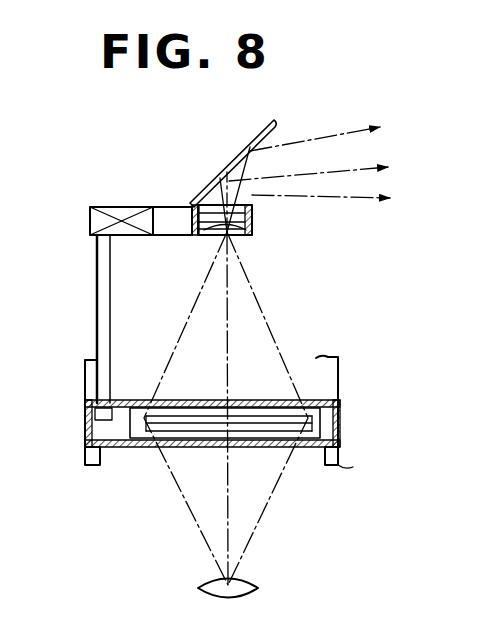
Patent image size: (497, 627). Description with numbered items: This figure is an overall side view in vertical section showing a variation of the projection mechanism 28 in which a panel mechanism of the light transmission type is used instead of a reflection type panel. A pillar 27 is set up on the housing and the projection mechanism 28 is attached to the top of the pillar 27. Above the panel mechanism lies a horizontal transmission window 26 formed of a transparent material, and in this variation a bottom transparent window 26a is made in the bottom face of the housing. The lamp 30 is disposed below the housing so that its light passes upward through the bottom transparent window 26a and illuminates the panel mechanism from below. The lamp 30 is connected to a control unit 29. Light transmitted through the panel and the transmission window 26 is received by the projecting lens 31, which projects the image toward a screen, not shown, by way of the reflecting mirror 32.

The transmission window 26 is at (272, 400).
The bottom transparent window 26a is at (306, 450).
The pillar 27 is at (97, 288).
The projection mechanism 28 is at (178, 207).
The control unit 29 is at (112, 207).
The lamp 30 is at (250, 590).
The projecting lens 31 is at (244, 236).
The reflecting mirror 32 is at (266, 135).